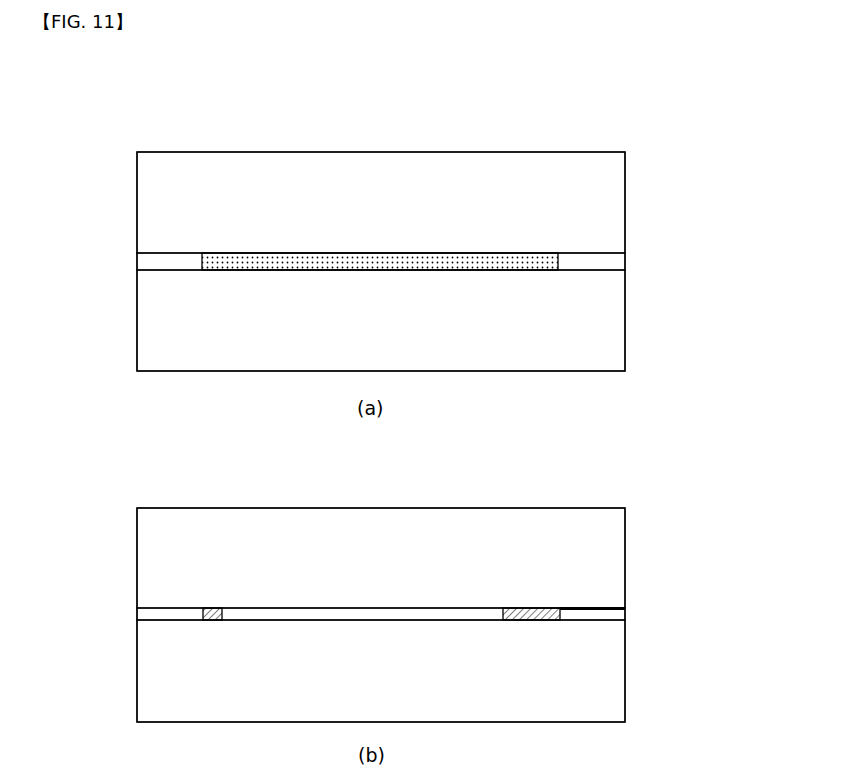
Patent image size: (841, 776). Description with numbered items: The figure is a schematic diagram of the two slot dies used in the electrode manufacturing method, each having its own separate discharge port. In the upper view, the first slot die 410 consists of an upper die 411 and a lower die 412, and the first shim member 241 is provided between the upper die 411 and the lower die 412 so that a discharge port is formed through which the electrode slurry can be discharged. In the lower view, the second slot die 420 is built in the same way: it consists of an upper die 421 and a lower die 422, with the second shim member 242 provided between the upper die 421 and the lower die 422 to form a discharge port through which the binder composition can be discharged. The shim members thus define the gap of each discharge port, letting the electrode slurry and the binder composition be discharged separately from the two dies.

The first slot die 410 is at (150, 120).
The upper die 411 is at (625, 182).
The first shim member 241 is at (625, 258).
The lower die 412 is at (625, 327).
The second slot die 420 is at (150, 481).
The upper die 421 is at (625, 540).
The second shim member 242 is at (625, 615).
The lower die 422 is at (625, 687).